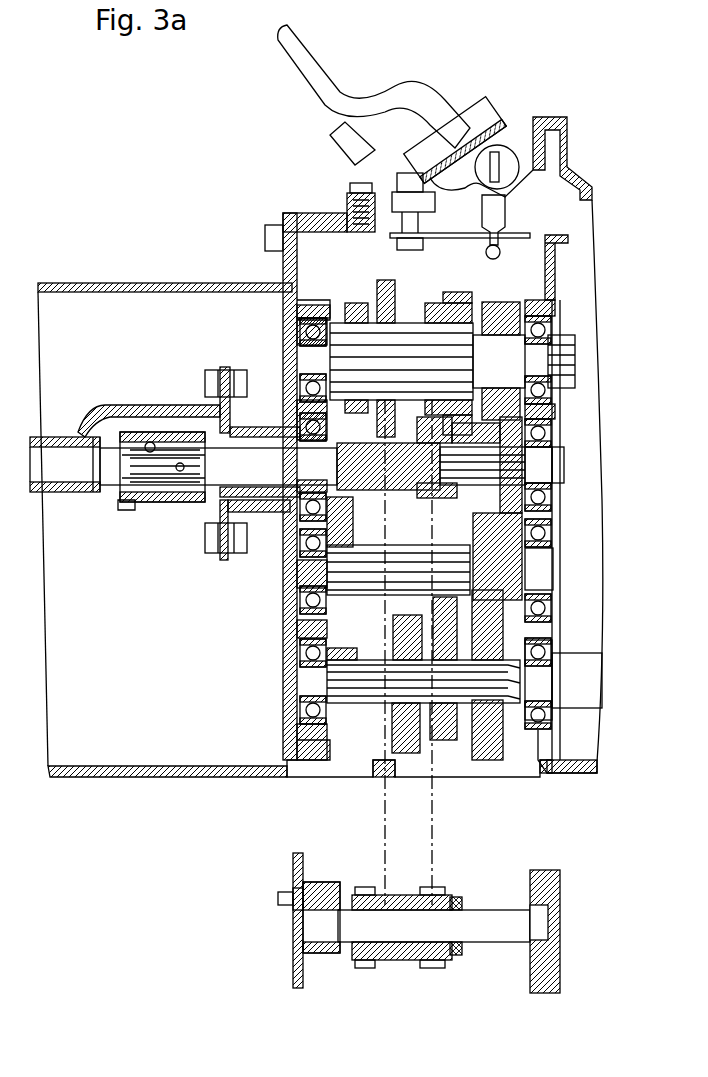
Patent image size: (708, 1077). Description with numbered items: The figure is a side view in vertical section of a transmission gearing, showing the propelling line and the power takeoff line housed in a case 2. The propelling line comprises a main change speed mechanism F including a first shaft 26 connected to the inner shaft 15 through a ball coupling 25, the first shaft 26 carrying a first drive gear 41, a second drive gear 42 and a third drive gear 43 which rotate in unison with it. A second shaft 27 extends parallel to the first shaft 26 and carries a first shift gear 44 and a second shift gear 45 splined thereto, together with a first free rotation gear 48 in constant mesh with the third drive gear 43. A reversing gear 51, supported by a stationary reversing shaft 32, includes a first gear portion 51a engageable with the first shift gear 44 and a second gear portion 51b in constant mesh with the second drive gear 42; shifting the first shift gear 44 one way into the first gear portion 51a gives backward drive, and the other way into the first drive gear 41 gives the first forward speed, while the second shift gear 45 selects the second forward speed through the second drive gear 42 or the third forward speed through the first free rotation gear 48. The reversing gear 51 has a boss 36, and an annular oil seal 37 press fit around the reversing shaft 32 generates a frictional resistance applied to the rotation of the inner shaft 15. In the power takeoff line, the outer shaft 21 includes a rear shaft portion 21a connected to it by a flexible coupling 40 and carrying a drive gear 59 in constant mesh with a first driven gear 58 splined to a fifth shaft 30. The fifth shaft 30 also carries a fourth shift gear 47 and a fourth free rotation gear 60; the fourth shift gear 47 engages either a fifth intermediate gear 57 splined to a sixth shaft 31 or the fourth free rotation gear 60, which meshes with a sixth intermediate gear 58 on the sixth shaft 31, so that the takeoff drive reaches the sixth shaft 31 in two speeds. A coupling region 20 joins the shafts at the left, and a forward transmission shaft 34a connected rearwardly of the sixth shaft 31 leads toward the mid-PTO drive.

The housing 2 is at (88, 285).
The second shaft 27 is at (332, 306).
The drive gear 59 is at (325, 365).
The first shift gear 44 is at (367, 282).
The main change speed mechanism F is at (347, 250).
The second drive gear 42 is at (422, 420).
The second shift gear 45 is at (456, 300).
The first free rotation gear 48 is at (540, 312).
The third drive gear 43 is at (545, 405).
The first shaft 26 is at (543, 470).
The inner shaft 15 is at (60, 453).
The outer shaft 21 is at (73, 490).
The rear shaft portion 21a is at (253, 433).
The coupling 20 is at (230, 470).
The ball coupling 25 is at (133, 513).
The flexible coupling 40 is at (215, 568).
The first drive gear 41 is at (310, 538).
The fifth shaft 30 is at (315, 568).
The first driven gear 58 is at (315, 620).
The sixth shaft 31 is at (318, 682).
The fourth shift gear 47 is at (433, 692).
The fifth intermediate gear 57 is at (414, 760).
The fourth free rotation gear 60 is at (492, 610).
The forward transmission shaft 34a is at (570, 697).
The stationary reversing shaft 32 is at (398, 933).
The boss 36 is at (410, 897).
The reversing gear 51 is at (396, 882).
The first gear portion 51a is at (363, 967).
The second gear portion 51b is at (437, 892).
The oil seal 37 is at (460, 953).